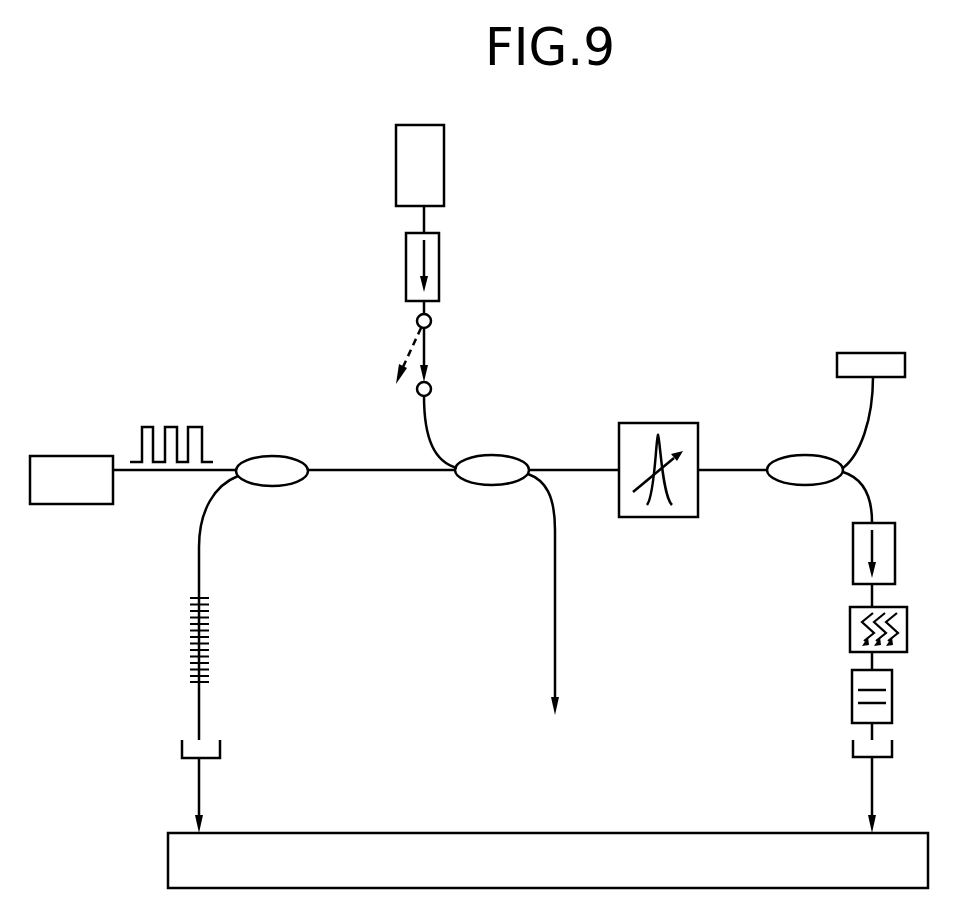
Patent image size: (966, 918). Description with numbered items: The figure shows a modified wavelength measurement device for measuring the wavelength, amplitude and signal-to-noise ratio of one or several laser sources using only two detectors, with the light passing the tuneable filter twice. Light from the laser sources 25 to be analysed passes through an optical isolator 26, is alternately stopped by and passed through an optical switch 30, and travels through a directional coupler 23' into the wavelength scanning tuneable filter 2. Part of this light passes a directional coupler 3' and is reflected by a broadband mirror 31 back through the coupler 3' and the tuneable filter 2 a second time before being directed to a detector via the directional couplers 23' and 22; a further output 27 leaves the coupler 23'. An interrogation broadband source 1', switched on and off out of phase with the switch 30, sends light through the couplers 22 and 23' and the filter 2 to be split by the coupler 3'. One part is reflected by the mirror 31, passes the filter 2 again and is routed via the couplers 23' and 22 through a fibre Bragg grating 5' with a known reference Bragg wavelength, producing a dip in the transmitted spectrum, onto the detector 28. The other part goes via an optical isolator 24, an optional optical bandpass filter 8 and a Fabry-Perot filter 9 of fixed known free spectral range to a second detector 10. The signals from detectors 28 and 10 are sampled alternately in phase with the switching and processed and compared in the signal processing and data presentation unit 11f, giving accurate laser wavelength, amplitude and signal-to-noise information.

The interrogation broadband source 1' is at (71, 460).
The wavelength scanning tuneable filter 2 is at (658, 451).
The directional coupler 3' is at (805, 453).
The fibre Bragg grating 5' is at (182, 669).
The optional optical bandpass filter 8 is at (863, 629).
The Fabry-Perot filter 9 is at (856, 696).
The second detector 10 is at (856, 750).
The signal processing and data presentation unit 11f is at (548, 860).
The directional coupler 22 is at (272, 453).
The directional coupler 23' is at (492, 455).
The optical isolator 24 is at (857, 553).
The laser sources 25 is at (403, 165).
The optical isolator 26 is at (403, 267).
The output port 27 is at (548, 615).
The detector 28 is at (221, 749).
The optical switch 30 is at (388, 355).
The broadband mirror 31 is at (891, 409).